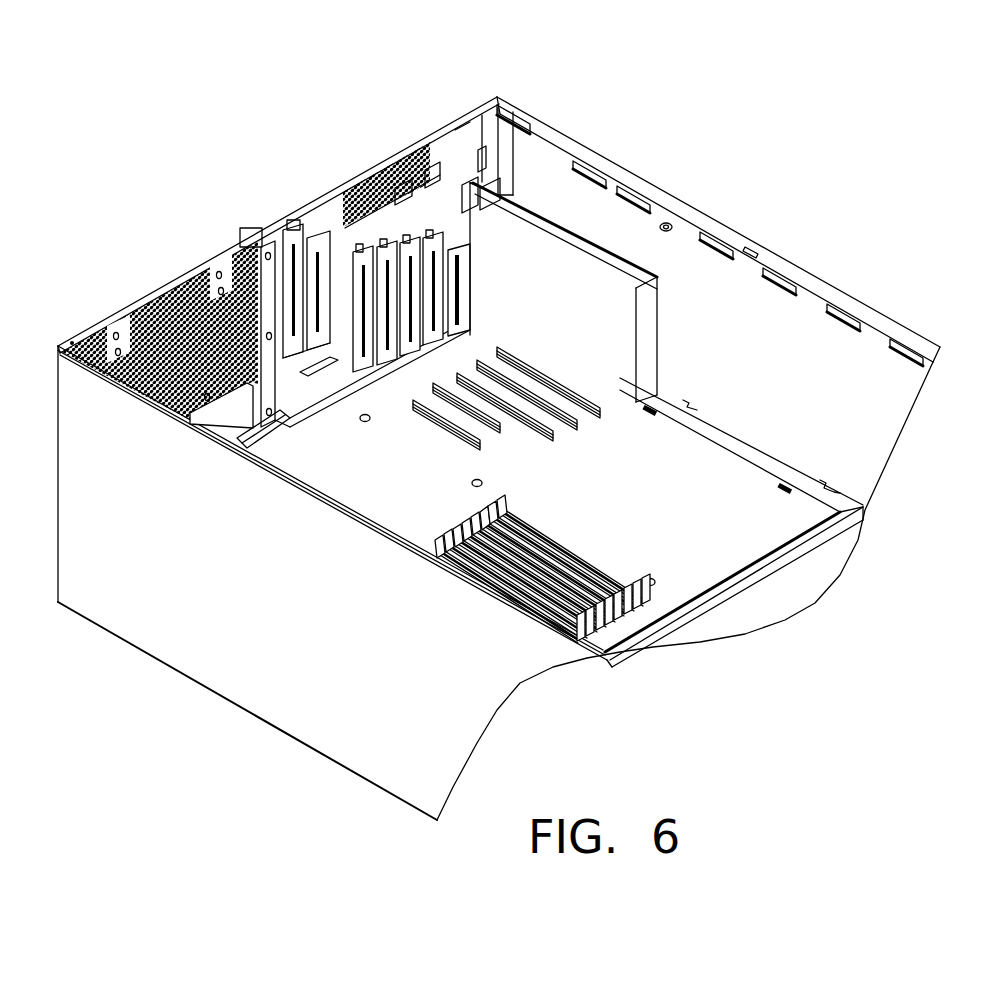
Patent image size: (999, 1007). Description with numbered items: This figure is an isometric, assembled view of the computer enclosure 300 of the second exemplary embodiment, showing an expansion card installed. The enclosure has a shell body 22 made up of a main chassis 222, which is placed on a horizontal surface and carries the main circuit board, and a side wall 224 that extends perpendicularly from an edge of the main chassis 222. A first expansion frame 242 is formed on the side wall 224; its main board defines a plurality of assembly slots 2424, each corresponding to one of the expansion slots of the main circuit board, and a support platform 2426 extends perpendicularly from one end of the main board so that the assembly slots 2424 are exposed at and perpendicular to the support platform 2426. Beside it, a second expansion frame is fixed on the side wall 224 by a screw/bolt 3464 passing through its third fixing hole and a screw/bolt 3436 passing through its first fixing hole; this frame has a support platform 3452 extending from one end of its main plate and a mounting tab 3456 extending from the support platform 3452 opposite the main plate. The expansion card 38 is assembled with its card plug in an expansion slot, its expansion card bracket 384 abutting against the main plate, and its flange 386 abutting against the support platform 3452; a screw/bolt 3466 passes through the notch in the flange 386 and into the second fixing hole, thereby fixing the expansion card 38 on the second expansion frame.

The computer enclosure 300 is at (168, 142).
The shell body 22 is at (847, 405).
The main chassis 222 is at (365, 472).
The side wall 224 is at (123, 313).
The first expansion frame 242 is at (375, 178).
The assembly slots 2424 is at (230, 262).
The support platform 2426 is at (333, 198).
The expansion card 38 is at (617, 303).
The expansion card bracket 384 is at (488, 182).
The flange 386 is at (467, 200).
The screw/bolt 3436 is at (462, 275).
The support platform 3452 is at (440, 140).
The mounting tab 3456 is at (473, 137).
The screw/bolt 3464 is at (462, 128).
The screw/bolt 3466 is at (480, 170).